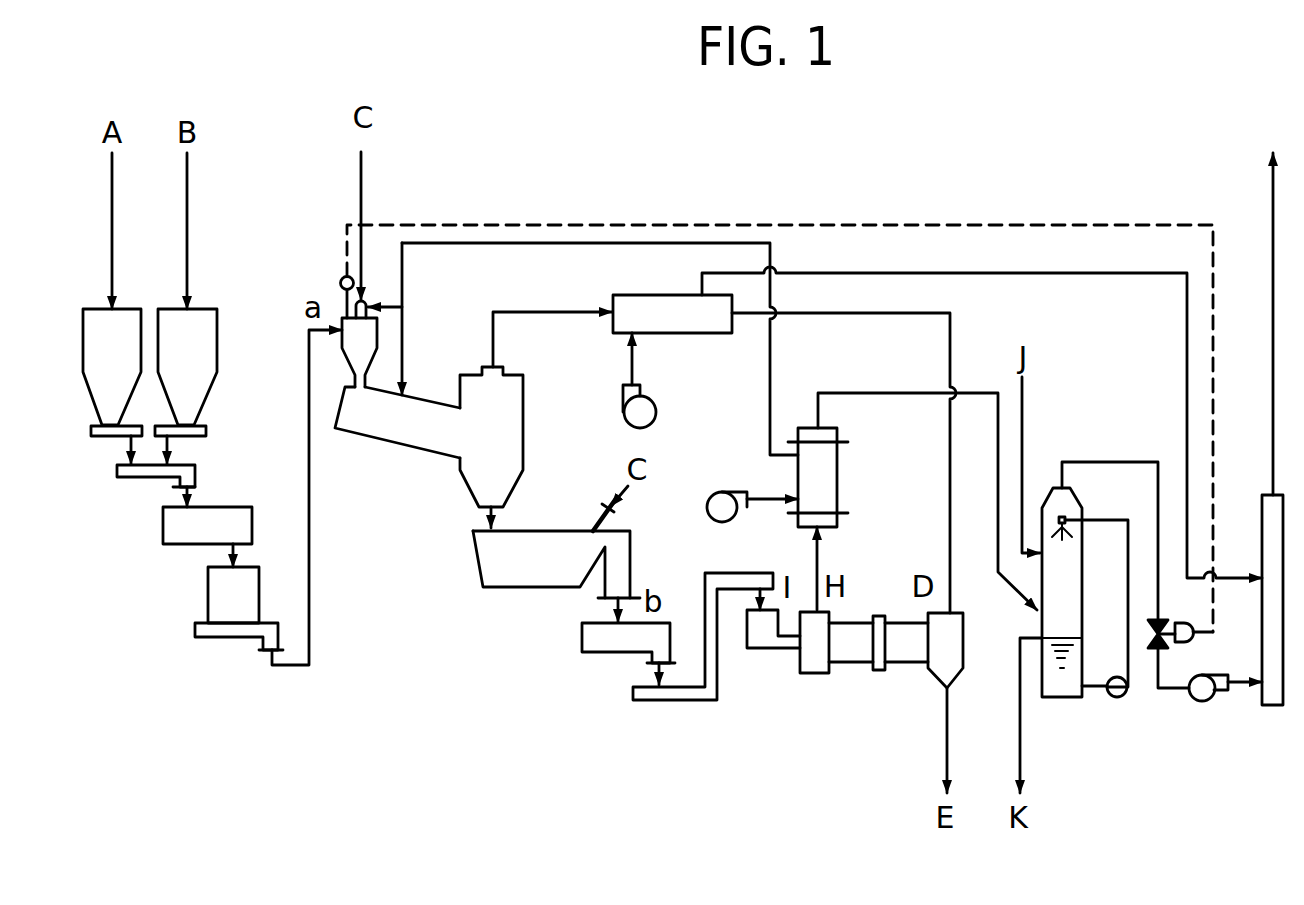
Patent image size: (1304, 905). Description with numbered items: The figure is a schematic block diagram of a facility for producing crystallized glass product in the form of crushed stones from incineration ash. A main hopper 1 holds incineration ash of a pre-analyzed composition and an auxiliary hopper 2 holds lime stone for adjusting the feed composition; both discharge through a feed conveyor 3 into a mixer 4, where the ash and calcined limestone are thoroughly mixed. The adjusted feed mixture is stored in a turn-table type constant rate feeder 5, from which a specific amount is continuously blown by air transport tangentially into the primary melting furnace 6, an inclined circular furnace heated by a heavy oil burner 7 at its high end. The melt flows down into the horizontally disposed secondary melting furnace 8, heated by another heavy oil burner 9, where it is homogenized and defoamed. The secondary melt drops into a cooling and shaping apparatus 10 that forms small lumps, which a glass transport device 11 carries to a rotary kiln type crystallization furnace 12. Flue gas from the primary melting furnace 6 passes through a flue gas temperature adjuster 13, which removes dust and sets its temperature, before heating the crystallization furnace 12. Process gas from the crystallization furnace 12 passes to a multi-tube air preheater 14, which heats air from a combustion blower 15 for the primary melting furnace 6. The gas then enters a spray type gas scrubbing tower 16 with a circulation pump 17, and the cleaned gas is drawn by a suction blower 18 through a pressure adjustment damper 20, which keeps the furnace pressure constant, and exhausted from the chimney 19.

The main hopper 1 is at (92, 307).
The auxiliary hopper 2 is at (212, 307).
The feed conveyor 3 is at (188, 465).
The mixer 4 is at (248, 507).
The constant rate feeder 5 is at (207, 593).
The primary melting furnace 6 is at (402, 445).
The burner 7 is at (368, 300).
The secondary melting furnace 8 is at (528, 588).
The burner 9 is at (597, 522).
The cooling and shaping apparatus 10 is at (603, 653).
The glass transport device 11 is at (720, 675).
The crystallization furnace 12 is at (855, 663).
The flue gas temperature adjuster 13 is at (668, 335).
The air preheater 14 is at (838, 470).
The combustion blower 15 is at (730, 493).
The gas scrubbing tower 16 is at (1082, 573).
The circulation pump 17 is at (1117, 697).
The suction blower 18 is at (1199, 701).
The chimney 19 is at (1262, 528).
The pressure adjustment damper 20 is at (1193, 642).